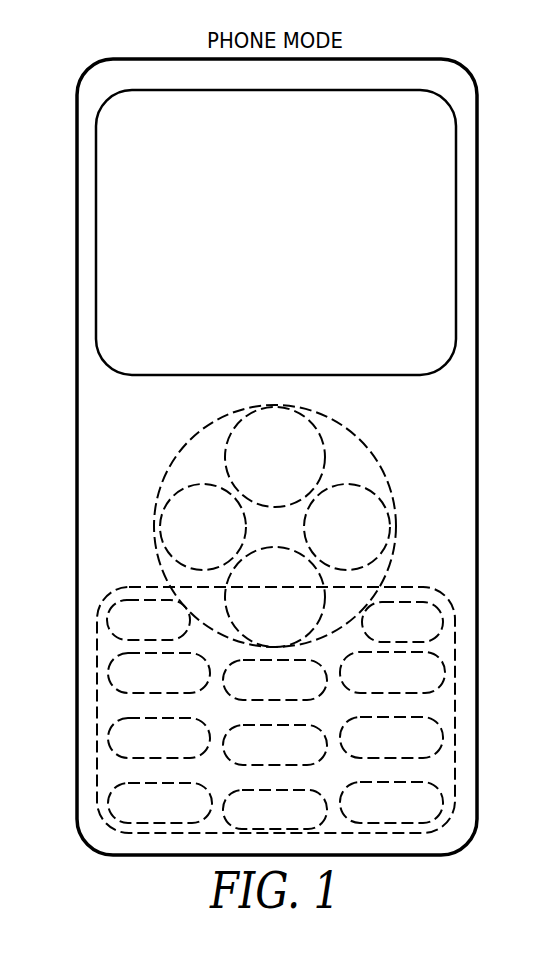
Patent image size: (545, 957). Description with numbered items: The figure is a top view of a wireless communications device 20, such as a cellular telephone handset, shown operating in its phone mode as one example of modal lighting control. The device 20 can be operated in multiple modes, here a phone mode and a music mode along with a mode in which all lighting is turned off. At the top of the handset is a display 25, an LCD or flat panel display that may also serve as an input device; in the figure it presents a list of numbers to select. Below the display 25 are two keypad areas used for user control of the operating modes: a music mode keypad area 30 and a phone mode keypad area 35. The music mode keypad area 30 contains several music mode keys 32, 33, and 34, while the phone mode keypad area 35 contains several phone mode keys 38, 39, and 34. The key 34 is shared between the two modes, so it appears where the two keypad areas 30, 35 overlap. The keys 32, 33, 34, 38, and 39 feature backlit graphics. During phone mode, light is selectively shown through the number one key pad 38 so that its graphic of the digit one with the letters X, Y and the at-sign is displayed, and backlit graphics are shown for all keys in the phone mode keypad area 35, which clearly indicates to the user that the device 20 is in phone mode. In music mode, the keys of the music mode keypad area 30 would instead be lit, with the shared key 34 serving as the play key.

The wireless communications device 20 is at (115, 58).
The display 25 is at (162, 90).
The music mode keypad area 30 is at (200, 446).
The music mode key 32 is at (258, 420).
The music mode key 33 is at (166, 525).
The shared key 34 is at (275, 560).
The phone mode keypad area 35 is at (249, 699).
The number 1 key pad 38 is at (108, 603).
The phone mode key 39 is at (112, 672).